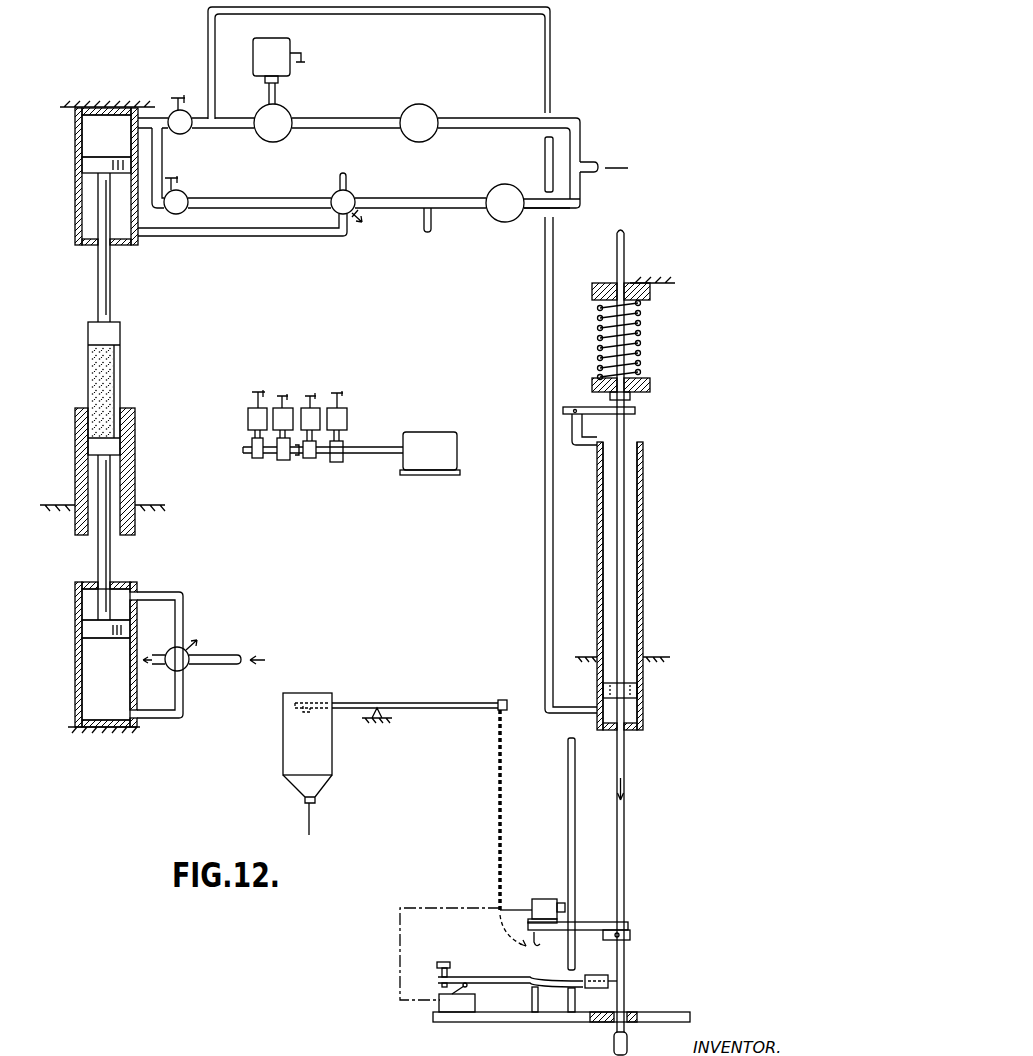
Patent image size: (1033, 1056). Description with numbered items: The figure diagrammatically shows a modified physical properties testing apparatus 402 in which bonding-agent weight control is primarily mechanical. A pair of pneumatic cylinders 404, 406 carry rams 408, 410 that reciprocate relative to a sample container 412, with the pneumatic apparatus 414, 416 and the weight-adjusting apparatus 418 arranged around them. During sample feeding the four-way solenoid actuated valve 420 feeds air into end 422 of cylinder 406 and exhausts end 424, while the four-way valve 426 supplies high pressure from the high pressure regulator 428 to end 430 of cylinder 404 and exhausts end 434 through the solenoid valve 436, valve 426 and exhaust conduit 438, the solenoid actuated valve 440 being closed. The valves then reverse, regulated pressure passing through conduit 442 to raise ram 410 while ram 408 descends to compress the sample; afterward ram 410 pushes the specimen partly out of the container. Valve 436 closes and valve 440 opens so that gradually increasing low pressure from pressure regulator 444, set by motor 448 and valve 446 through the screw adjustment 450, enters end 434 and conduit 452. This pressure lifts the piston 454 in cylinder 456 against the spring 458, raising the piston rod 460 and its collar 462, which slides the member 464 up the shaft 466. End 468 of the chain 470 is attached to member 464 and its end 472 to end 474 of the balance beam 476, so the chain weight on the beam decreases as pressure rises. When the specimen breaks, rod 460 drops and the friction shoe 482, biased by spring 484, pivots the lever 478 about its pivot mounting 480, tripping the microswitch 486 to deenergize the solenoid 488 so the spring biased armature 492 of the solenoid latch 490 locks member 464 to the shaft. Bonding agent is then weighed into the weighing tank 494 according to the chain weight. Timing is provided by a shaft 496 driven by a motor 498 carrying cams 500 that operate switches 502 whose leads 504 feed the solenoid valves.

The physical properties testing apparatus 402 is at (609, 73).
The pneumatic cylinder 404 is at (75, 209).
The pneumatic cylinder 406 is at (75, 678).
The ram 408 is at (98, 290).
The ram 410 is at (98, 557).
The sample container 412 is at (135, 486).
The pneumatic apparatus 414 is at (296, 245).
The pneumatic apparatus 416 is at (209, 624).
The apparatus for adjusting the weight of the bonding agent 418 is at (654, 557).
The four-way solenoid actuated valve 420 is at (188, 671).
The end of cylinder 406 422 is at (82, 601).
The end of cylinder 406 424 is at (102, 735).
The four-way valve 426 is at (331, 205).
The high pressure regulator 428 is at (498, 222).
The end of cylinder 404 430 is at (88, 222).
The end of cylinder 404 434 is at (88, 128).
The solenoid valve 436 is at (188, 195).
The exhaust conduit 438 is at (348, 181).
The solenoid actuated valve 440 is at (188, 131).
The conduit 442 is at (425, 232).
The pressure regulator 444 is at (433, 108).
The valve 446 is at (292, 112).
The motor 448 is at (292, 39).
The screw adjustment 450 is at (278, 90).
The conduit 452 is at (546, 522).
The piston 454 is at (640, 690).
The cylinder 456 is at (644, 622).
The spring 458 is at (641, 338).
The piston rod 460 is at (624, 840).
The collar 462 is at (630, 936).
The member 464 is at (578, 908).
The shaft 466 is at (568, 817).
The end of chain 470 468 is at (529, 938).
The chain 470 is at (498, 853).
The end of chain 470 472 is at (496, 706).
The end of balance beam 474 is at (500, 700).
The balance beam 476 is at (426, 710).
The lever 478 is at (476, 983).
The pivot mounting 480 is at (533, 977).
The friction shoe 482 is at (608, 983).
The spring 484 is at (592, 990).
The microswitch 486 is at (457, 1012).
The solenoid 488 is at (540, 899).
The solenoid latch 490 is at (500, 911).
The spring biased armature 492 is at (530, 897).
The weighing tank 494 is at (283, 748).
The shaft 496 is at (352, 455).
The motor 498 is at (433, 432).
The cams 500 is at (280, 462).
The switches 502 is at (348, 418).
The leads 504 is at (172, 105).